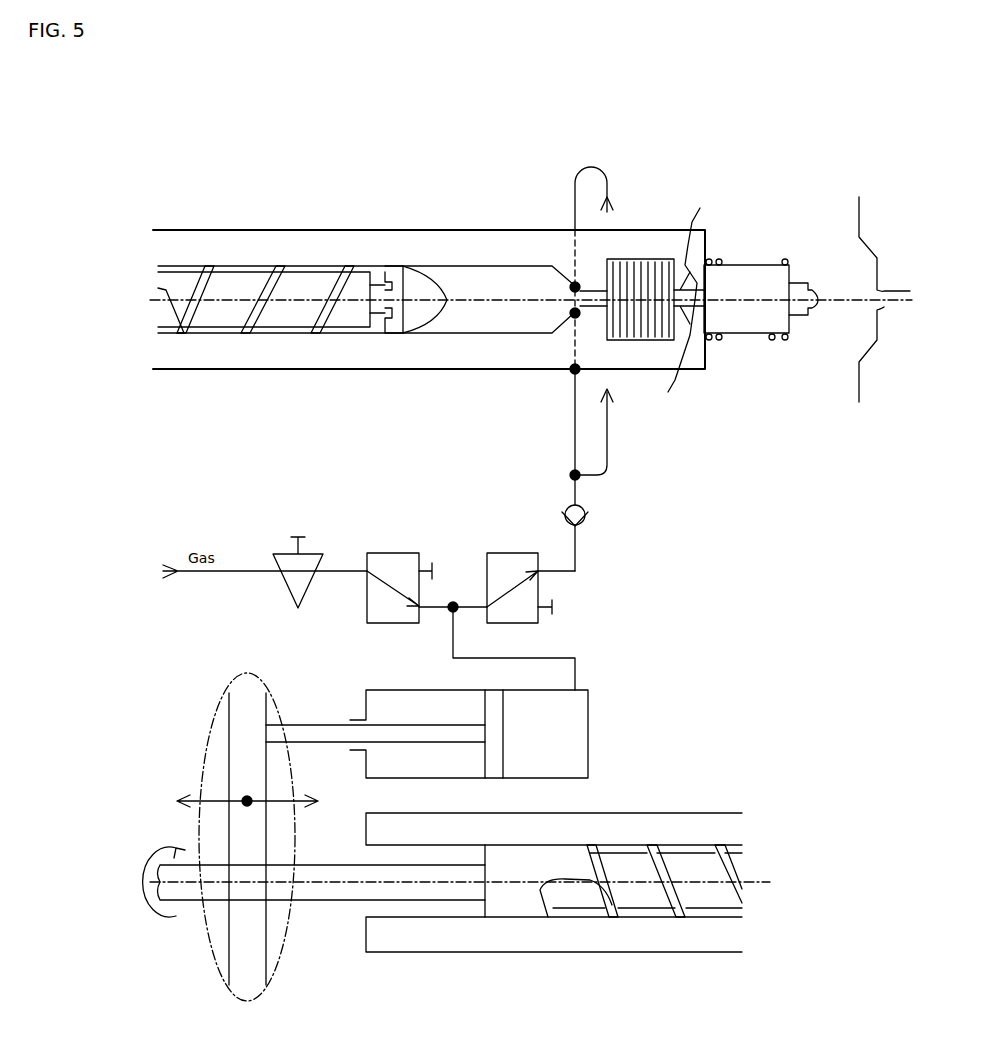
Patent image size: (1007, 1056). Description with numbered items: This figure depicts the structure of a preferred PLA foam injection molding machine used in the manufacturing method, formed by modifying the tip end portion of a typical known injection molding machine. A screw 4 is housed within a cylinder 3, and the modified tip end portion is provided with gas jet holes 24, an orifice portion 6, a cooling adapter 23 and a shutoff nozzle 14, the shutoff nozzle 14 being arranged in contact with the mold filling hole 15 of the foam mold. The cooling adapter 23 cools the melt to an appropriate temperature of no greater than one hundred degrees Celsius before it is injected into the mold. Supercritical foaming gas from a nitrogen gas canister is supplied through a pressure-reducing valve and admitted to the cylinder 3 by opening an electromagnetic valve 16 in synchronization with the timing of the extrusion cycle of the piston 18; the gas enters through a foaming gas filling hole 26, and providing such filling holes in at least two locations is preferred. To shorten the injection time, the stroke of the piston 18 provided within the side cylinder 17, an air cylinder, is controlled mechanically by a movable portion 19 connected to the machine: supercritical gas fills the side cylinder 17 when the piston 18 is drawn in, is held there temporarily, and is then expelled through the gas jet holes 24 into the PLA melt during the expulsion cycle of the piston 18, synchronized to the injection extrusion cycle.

The cylinder 3 is at (443, 250).
The screw 4 is at (315, 280).
The orifice portion 6 is at (637, 262).
The shutoff nozzle 14 is at (818, 313).
The mold filling hole 15 is at (867, 290).
The electromagnetic valve 16 is at (397, 551).
The side cylinder 17 is at (589, 696).
The piston 18 is at (483, 712).
The movable portion 19 is at (238, 673).
The cooling adapter 23 is at (728, 260).
The gas jet hole 24 is at (572, 284).
The foaming gas filling hole 26 is at (572, 373).